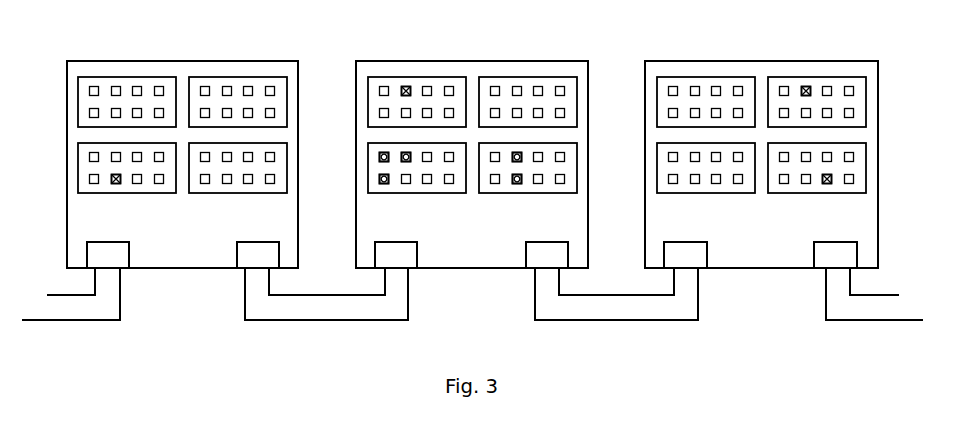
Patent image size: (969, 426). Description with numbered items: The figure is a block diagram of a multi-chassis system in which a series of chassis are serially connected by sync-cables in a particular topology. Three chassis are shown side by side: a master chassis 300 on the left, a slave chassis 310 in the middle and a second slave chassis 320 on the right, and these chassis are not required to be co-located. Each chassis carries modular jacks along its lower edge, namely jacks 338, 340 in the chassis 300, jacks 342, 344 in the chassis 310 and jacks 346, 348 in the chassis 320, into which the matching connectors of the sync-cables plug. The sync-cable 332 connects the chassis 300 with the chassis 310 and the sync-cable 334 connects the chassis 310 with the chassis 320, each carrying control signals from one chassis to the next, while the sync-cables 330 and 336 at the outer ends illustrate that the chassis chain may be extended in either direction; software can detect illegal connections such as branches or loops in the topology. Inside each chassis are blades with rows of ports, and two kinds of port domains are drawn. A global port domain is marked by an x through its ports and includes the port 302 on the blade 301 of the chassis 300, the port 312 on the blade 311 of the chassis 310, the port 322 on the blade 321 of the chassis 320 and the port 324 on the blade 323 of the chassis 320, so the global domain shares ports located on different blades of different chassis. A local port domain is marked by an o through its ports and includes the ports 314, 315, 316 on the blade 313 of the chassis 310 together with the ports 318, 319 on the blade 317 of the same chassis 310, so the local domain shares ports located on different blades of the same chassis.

The chassis 300 is at (99, 61).
The blade 301 is at (120, 194).
The port 302 is at (112, 184).
The chassis 310 is at (369, 61).
The blade 311 is at (424, 77).
The port 312 is at (405, 86).
The blade 313 is at (421, 194).
The port 314 is at (379, 157).
The port 315 is at (406, 152).
The port 316 is at (382, 184).
The blade 317 is at (540, 194).
The port 318 is at (517, 152).
The port 319 is at (517, 184).
The chassis 320 is at (678, 61).
The blade 321 is at (824, 77).
The port 322 is at (806, 86).
The blade 323 is at (860, 193).
The port 324 is at (830, 184).
The sync-cable 330 is at (77, 320).
The sync-cable 332 is at (290, 320).
The sync-cable 334 is at (580, 320).
The sync-cable 336 is at (865, 320).
The RJ-45 jack 338 is at (90, 250).
The RJ-45 jack 340 is at (240, 255).
The RJ-45 jack 342 is at (379, 250).
The RJ-45 jack 344 is at (530, 255).
The RJ-45 jack 346 is at (668, 250).
The RJ-45 jack 348 is at (818, 255).